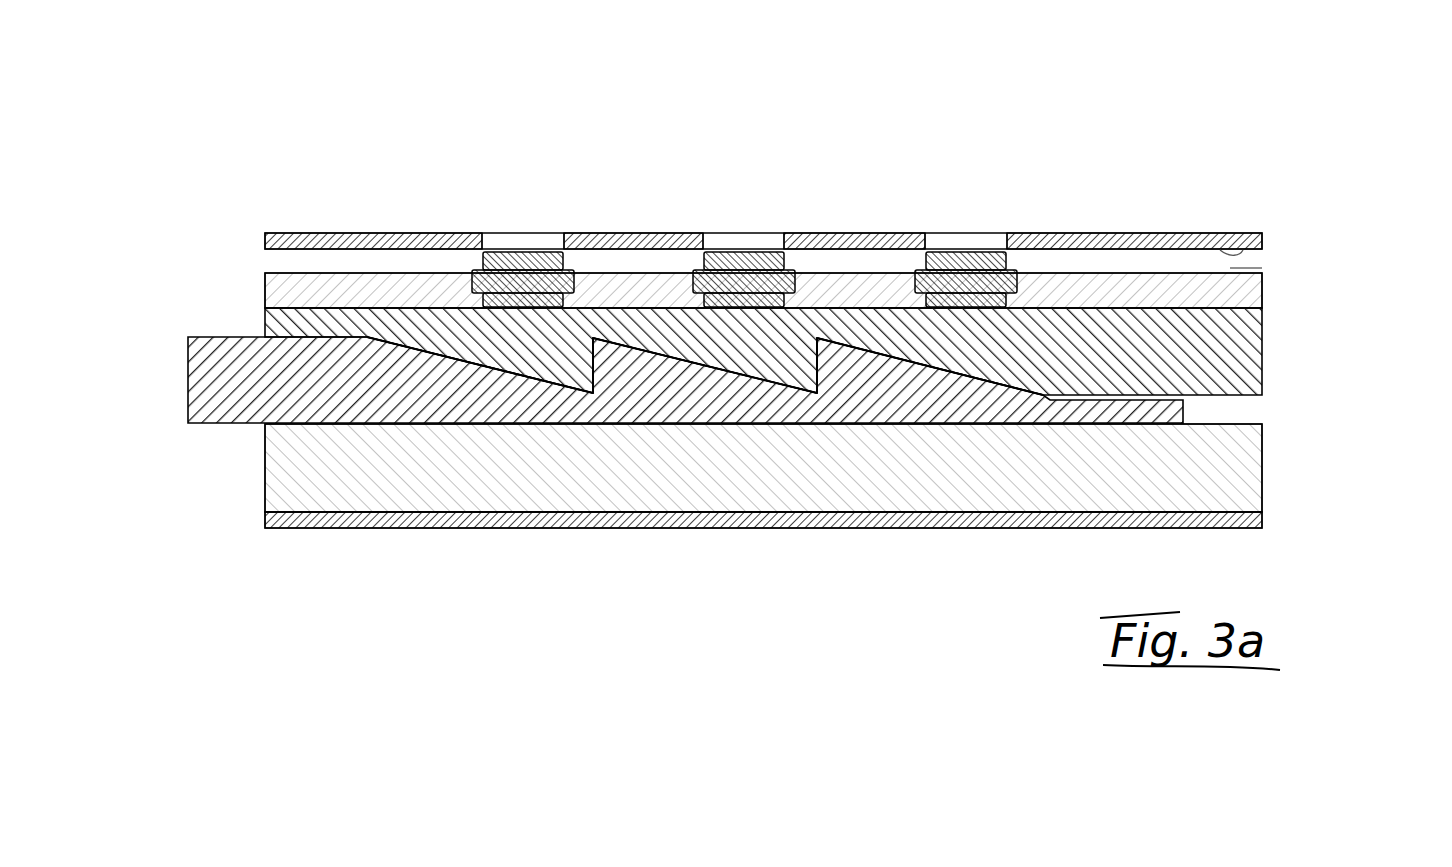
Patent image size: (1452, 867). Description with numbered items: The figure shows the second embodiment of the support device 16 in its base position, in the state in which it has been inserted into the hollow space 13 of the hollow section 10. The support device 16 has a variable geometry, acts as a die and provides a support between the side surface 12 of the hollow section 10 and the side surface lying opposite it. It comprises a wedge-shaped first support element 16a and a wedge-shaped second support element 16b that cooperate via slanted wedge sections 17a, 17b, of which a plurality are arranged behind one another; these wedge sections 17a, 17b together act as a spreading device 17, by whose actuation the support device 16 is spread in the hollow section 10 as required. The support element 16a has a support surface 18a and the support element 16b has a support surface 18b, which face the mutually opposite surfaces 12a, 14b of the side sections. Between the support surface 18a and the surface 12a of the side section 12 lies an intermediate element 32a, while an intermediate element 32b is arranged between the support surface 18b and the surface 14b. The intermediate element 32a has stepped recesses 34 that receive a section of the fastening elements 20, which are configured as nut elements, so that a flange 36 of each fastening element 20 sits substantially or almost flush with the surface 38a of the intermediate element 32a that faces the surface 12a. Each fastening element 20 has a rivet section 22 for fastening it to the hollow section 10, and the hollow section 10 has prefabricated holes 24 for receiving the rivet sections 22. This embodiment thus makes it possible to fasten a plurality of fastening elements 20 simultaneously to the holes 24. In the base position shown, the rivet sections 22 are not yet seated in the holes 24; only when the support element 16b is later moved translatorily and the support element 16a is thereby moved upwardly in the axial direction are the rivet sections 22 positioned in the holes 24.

The hollow section 10 is at (1188, 189).
The side surface 12 is at (1063, 232).
The surface of the side section 12a is at (1250, 230).
The hollow space 13 is at (264, 263).
The surface of the side section 14b is at (826, 510).
The support device 16 is at (165, 265).
The first support element 16a is at (1262, 348).
The second support element 16b is at (1183, 412).
The spreading device 17 is at (537, 686).
The wedge section 17a is at (453, 349).
The wedge section 17b is at (673, 370).
The support surface 18a is at (1230, 300).
The support surface 18b is at (943, 416).
The fastening element 20 is at (670, 258).
The rivet section 22 is at (760, 272).
The hole 24 is at (503, 230).
The intermediate element 32a is at (1285, 300).
The intermediate element 32b is at (1262, 472).
The stepped recess 34 is at (814, 285).
The flange 36 is at (700, 273).
The surface of the intermediate element 38a is at (1240, 268).